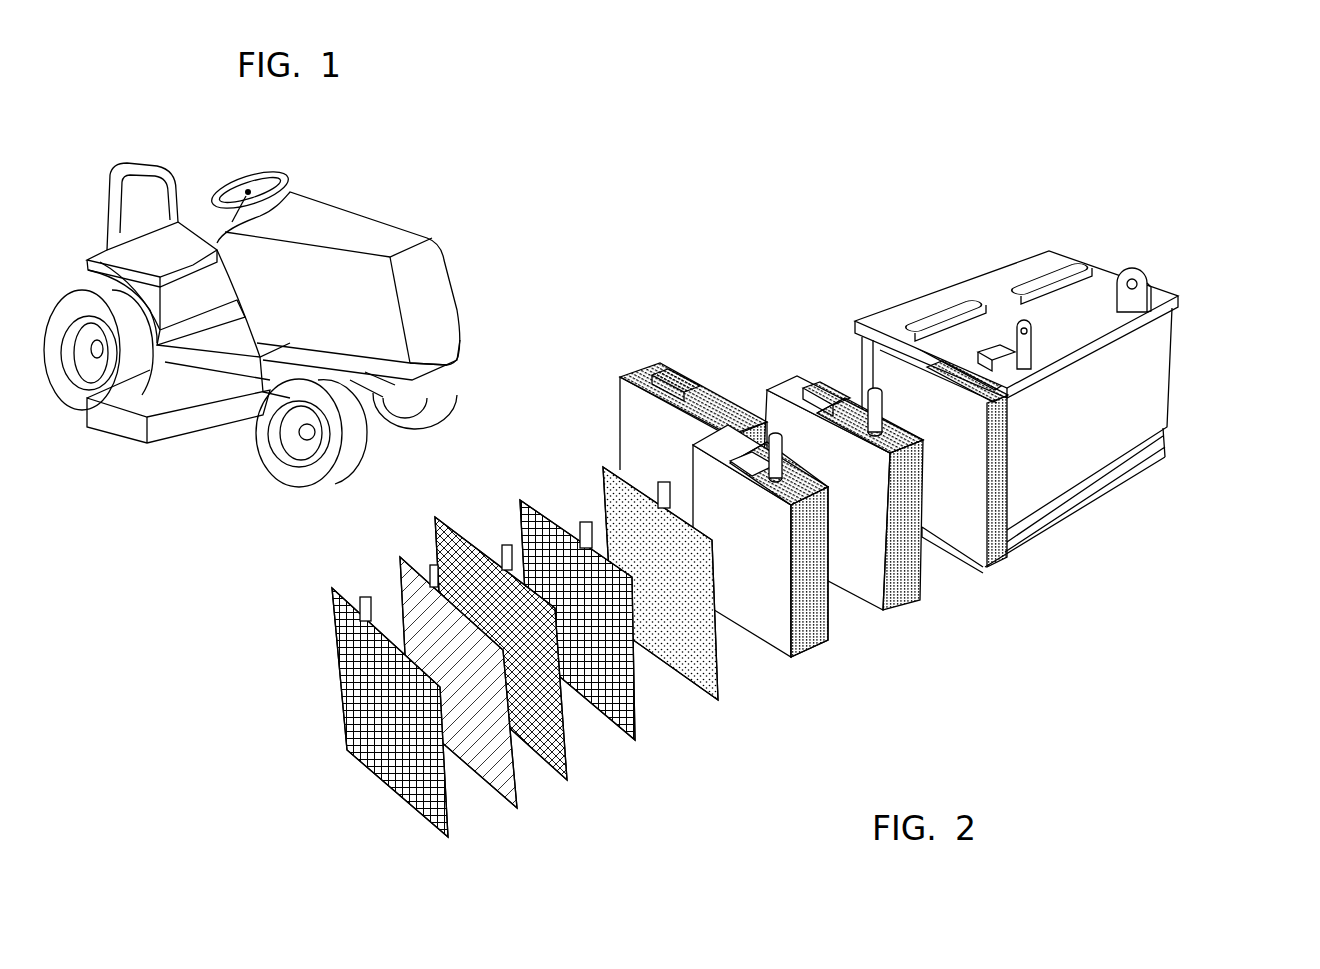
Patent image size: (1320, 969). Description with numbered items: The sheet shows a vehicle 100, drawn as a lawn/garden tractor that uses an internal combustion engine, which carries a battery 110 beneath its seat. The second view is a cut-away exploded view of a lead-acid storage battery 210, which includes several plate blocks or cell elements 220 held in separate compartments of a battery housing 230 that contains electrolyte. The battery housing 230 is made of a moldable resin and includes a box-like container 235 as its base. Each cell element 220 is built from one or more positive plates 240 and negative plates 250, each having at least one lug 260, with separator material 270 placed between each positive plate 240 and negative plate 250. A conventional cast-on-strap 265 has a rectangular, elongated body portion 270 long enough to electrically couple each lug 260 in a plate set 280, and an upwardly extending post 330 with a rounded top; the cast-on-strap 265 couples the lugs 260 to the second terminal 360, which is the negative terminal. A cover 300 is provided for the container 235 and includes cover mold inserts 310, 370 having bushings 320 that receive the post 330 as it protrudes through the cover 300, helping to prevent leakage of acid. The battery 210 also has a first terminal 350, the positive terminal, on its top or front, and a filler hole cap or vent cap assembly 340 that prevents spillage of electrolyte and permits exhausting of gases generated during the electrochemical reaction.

In FIG. 1, the vehicle 100 is at (396, 178).
In FIG. 1, the battery 110 is at (186, 233).
In FIG. 2, the lead-acid storage battery 210 is at (1080, 219).
In FIG. 2, the cell element 220 is at (914, 631).
In FIG. 2, the battery housing 230 is at (1198, 359).
In FIG. 2, the container 235 is at (1120, 493).
In FIG. 2, the positive plate 240 is at (497, 813).
In FIG. 2, the negative plate 250 is at (700, 682).
In FIG. 2, the lug 260 is at (620, 468).
In FIG. 2, the cast-on-strap 265 is at (903, 389).
In FIG. 2, the separator material 270 is at (857, 398).
In FIG. 2, the plate set 280 is at (822, 677).
In FIG. 2, the cover 300 is at (955, 284).
In FIG. 2, the cover mold insert 310 is at (1049, 337).
In FIG. 2, the bushing 320 is at (1007, 355).
In FIG. 2, the post 330 is at (862, 347).
In FIG. 2, the vent cap assembly 340 is at (1080, 262).
In FIG. 2, the first terminal 350 is at (1152, 280).
In FIG. 2, the second terminal 360 is at (1022, 365).
In FIG. 2, the cover mold insert 370 is at (1165, 257).